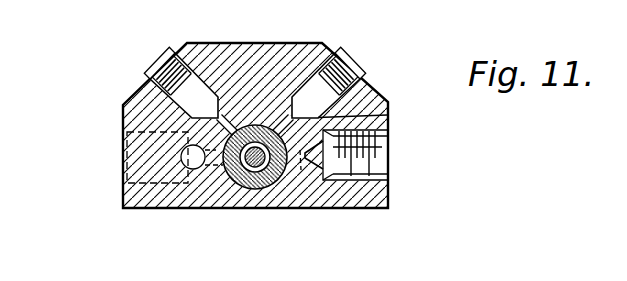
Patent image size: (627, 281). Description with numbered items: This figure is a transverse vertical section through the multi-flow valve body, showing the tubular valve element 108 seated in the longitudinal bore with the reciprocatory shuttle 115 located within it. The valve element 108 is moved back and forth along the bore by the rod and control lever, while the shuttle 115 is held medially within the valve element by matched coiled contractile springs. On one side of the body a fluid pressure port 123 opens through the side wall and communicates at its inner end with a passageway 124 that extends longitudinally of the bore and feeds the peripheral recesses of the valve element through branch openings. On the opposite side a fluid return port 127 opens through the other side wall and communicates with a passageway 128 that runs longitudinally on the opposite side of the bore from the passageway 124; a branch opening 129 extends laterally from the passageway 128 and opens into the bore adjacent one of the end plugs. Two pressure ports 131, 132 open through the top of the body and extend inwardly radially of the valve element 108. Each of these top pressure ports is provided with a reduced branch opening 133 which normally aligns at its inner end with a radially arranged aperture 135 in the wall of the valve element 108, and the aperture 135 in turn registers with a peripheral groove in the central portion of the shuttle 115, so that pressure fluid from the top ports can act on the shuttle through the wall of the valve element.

The tubular valve element 108 is at (245, 188).
The reciprocatory shuttle 115 is at (271, 199).
The fluid pressure port 123 is at (143, 158).
The passageway 124 is at (192, 170).
The fluid return port 127 is at (372, 164).
The passageway 128 is at (310, 165).
The branch opening 129 is at (322, 215).
The pressure port 131 is at (162, 73).
The pressure port 132 is at (350, 72).
The reduced branch opening 133 is at (283, 117).
The radially arranged aperture 135 is at (387, 115).